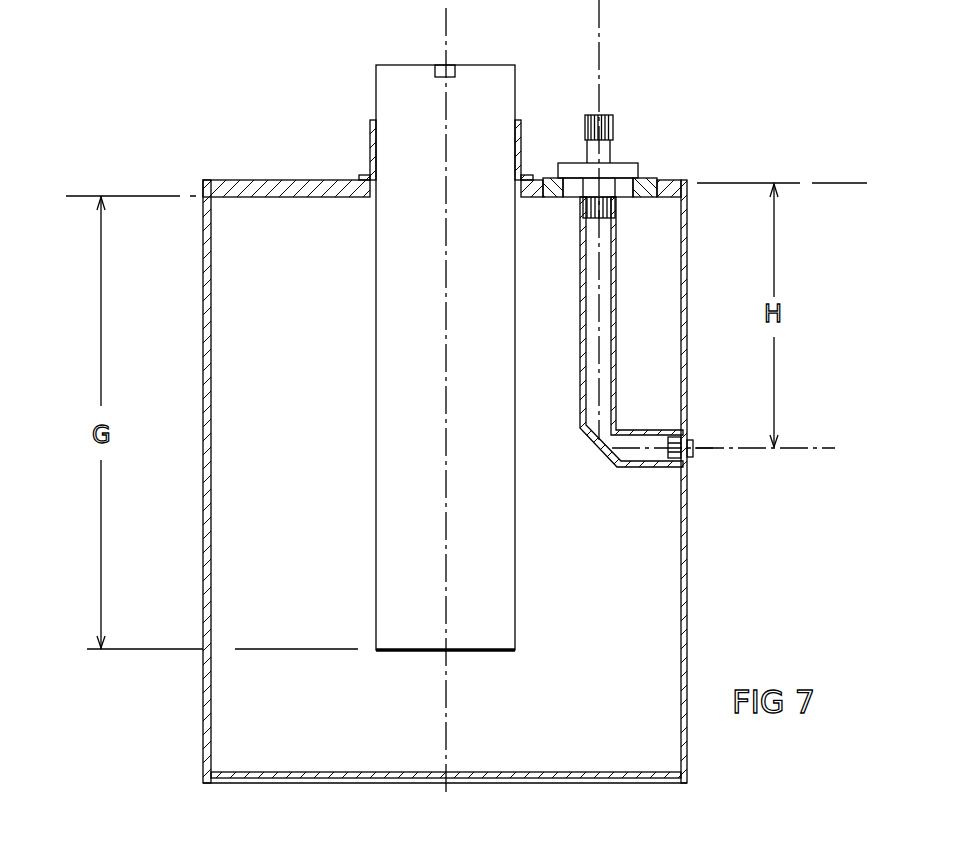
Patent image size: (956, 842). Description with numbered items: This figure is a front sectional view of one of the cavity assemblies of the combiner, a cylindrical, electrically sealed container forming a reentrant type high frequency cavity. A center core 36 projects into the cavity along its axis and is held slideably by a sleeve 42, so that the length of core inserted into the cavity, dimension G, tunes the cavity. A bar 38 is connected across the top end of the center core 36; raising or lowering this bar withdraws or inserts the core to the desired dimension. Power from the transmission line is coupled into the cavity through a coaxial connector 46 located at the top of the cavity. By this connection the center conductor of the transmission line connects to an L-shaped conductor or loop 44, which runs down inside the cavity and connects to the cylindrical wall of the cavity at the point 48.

The center core 36 is at (389, 64).
The bar 38 is at (448, 63).
The sleeve 42 is at (372, 128).
The L-shaped conductor or loop 44 is at (580, 273).
The coaxial connector 46 is at (637, 155).
The connection point to cavity wall 48 is at (695, 459).